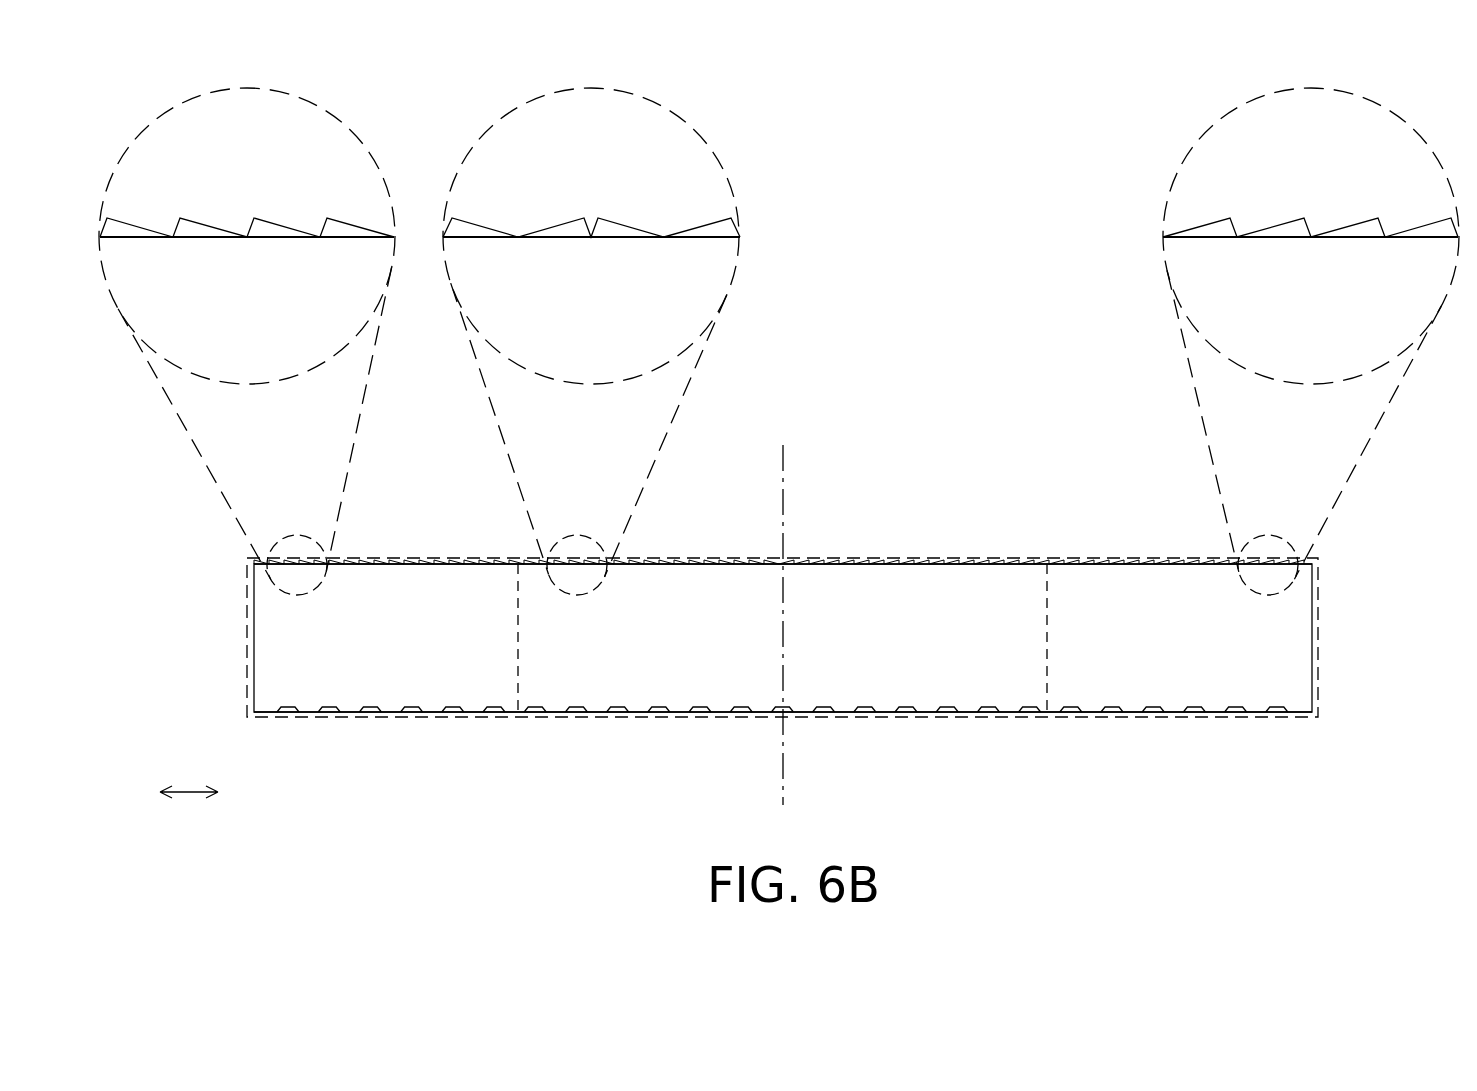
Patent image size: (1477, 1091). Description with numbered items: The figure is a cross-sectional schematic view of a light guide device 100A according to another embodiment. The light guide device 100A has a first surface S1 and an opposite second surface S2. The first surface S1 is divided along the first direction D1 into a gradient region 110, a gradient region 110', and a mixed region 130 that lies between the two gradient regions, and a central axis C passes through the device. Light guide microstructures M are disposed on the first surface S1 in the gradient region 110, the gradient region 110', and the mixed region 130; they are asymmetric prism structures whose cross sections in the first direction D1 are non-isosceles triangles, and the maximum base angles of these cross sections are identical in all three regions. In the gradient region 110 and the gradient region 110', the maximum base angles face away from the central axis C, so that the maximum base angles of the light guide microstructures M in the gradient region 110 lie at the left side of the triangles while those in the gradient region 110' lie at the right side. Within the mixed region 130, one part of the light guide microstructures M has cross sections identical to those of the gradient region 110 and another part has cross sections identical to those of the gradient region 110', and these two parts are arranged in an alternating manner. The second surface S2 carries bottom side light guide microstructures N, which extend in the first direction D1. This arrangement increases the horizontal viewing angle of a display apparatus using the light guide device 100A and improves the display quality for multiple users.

The light guide device 100A is at (1470, 831).
The gradient region 110 is at (386, 694).
The gradient region 110' is at (1179, 694).
The mixed region 130 is at (930, 717).
The bottom side light guide microstructures N is at (1112, 708).
The light guide microstructures M is at (207, 226).
The first surface S1 is at (1103, 562).
The second surface S2 is at (1256, 714).
The central axis C is at (784, 603).
The first direction D1 is at (189, 815).